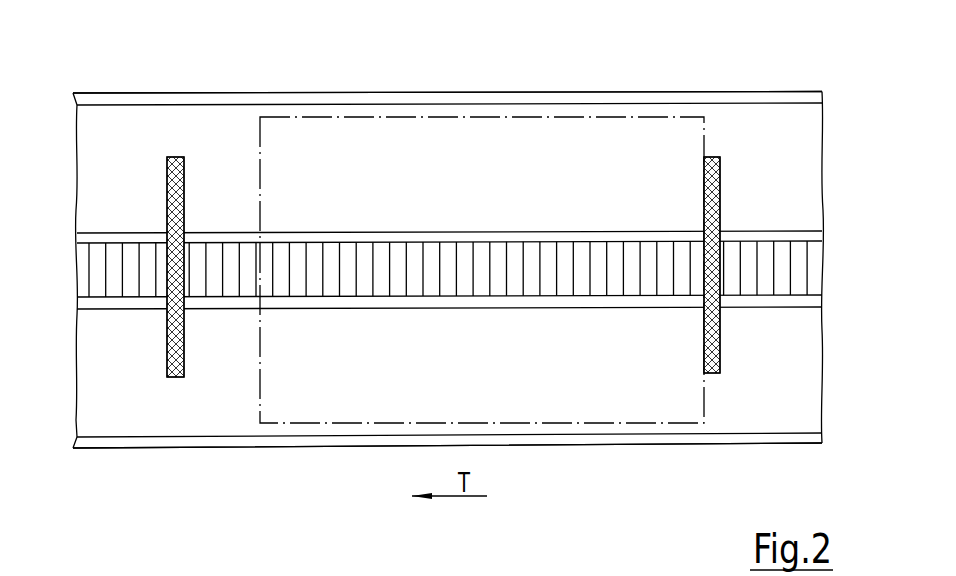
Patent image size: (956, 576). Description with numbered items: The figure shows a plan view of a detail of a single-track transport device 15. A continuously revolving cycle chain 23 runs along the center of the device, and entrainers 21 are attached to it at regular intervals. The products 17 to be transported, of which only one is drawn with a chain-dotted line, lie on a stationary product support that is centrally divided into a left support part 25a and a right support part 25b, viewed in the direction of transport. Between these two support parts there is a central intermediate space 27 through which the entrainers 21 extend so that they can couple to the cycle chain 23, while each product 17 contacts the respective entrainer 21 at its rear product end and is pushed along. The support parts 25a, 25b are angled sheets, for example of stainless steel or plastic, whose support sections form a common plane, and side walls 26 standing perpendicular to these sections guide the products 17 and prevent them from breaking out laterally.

The single-track transport device 15 is at (84, 61).
The product 17 is at (323, 424).
The entrainer 21 is at (166, 366).
The cycle chain 23 is at (795, 272).
The left support part 25a is at (722, 413).
The right support part 25b is at (748, 123).
The side wall 26 is at (225, 100).
The central intermediate space 27 is at (82, 303).